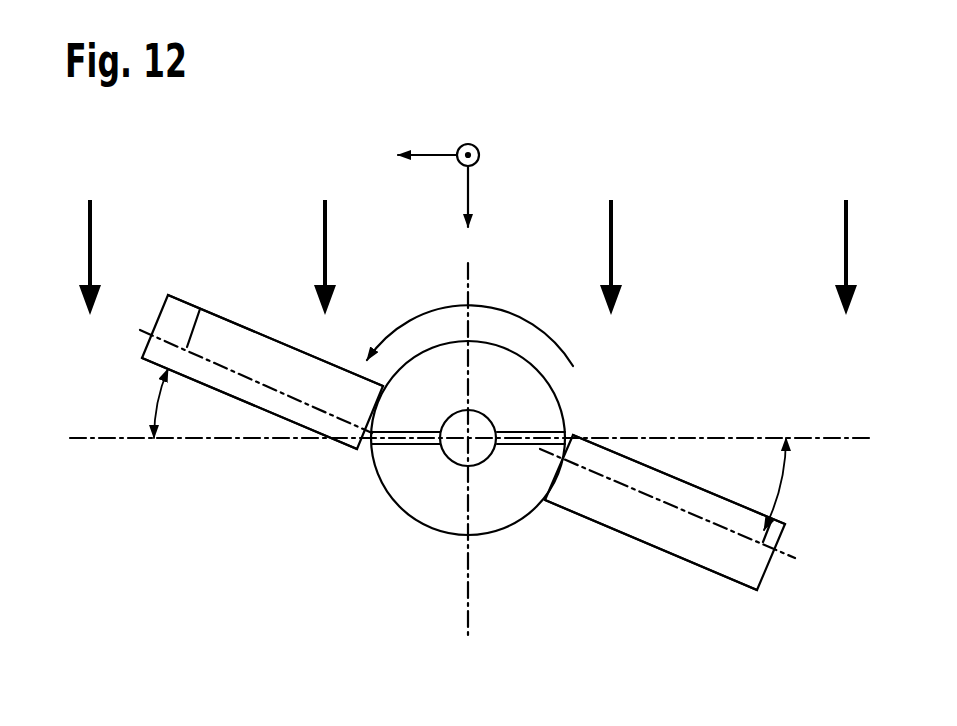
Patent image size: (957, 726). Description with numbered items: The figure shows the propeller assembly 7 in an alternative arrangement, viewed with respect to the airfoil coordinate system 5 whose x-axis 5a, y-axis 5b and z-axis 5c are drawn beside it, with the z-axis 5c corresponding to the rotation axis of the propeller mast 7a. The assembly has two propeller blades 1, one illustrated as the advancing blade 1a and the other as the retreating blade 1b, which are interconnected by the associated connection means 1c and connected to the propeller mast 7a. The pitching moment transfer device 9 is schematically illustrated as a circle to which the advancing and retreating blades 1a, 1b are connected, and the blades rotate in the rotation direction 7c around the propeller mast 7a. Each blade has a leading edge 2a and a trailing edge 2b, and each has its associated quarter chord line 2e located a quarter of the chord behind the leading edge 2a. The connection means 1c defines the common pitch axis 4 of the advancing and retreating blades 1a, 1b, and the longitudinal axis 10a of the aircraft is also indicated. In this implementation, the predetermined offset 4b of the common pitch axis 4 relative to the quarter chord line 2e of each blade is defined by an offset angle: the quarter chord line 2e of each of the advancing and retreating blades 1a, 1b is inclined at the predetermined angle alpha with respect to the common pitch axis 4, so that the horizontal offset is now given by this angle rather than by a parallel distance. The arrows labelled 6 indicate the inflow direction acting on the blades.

The propeller blade 1 is at (463, 424).
The advancing blade 1a is at (736, 560).
The retreating blade 1b is at (250, 343).
The connection means 1c is at (408, 449).
The leading edge 2a is at (245, 402).
The trailing edge 2b is at (283, 330).
The quarter chord line 2e is at (190, 347).
The pitch axis 4 is at (87, 442).
The predetermined offset 4b is at (164, 376).
The airfoil coordinate system 5 is at (480, 154).
The x-axis 5a is at (463, 188).
The y-axis 5b is at (428, 153).
The z-axis 5c is at (477, 163).
The flow direction 6 is at (77, 247).
The propeller assembly 7 is at (652, 353).
The propeller mast 7a is at (490, 460).
The rotation direction 7c is at (548, 332).
The pitching moment transfer device 9 is at (422, 525).
The longitudinal axis 10a is at (467, 268).